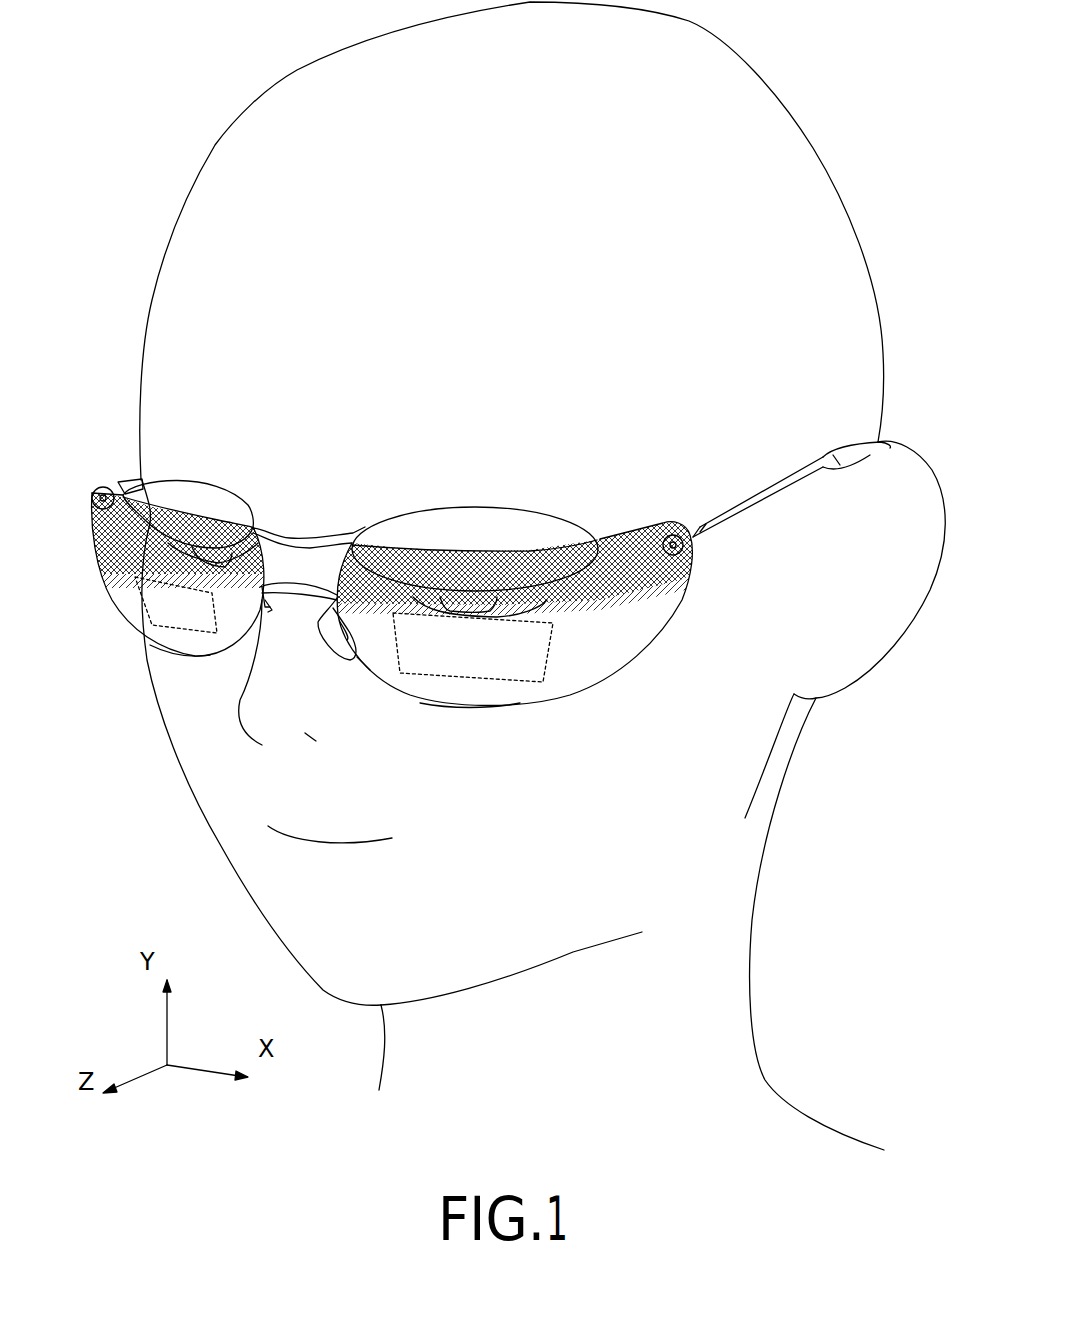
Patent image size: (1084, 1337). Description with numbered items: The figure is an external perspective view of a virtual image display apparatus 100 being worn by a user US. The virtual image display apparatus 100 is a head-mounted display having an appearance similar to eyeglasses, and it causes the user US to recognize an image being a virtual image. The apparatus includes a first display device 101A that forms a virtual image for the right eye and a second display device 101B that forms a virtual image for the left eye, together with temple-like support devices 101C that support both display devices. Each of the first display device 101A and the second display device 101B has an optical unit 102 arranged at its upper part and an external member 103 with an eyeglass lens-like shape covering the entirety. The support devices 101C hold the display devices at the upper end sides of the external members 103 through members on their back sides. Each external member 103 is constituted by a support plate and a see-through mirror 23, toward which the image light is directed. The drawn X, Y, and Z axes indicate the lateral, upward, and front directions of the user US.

The user US is at (855, 223).
The virtual image display apparatus 100 is at (496, 430).
The first display device 101A is at (218, 488).
The second display device 101B is at (552, 501).
The support devices 101C is at (123, 493).
The optical unit 102 is at (185, 489).
The external member 103 is at (197, 655).
The see-through mirror 23 is at (145, 628).